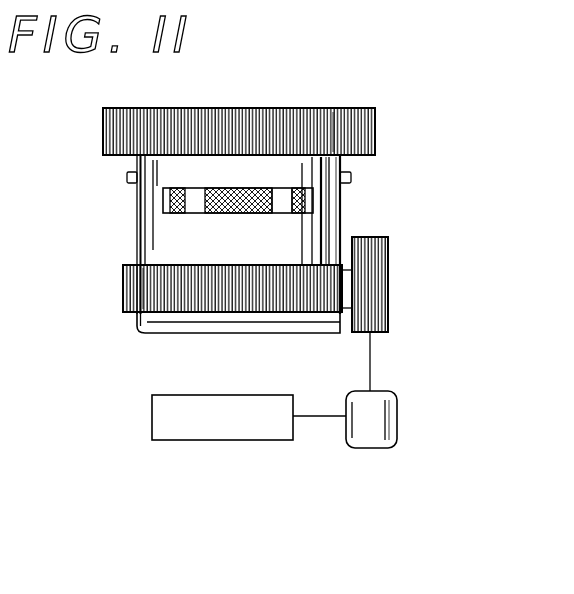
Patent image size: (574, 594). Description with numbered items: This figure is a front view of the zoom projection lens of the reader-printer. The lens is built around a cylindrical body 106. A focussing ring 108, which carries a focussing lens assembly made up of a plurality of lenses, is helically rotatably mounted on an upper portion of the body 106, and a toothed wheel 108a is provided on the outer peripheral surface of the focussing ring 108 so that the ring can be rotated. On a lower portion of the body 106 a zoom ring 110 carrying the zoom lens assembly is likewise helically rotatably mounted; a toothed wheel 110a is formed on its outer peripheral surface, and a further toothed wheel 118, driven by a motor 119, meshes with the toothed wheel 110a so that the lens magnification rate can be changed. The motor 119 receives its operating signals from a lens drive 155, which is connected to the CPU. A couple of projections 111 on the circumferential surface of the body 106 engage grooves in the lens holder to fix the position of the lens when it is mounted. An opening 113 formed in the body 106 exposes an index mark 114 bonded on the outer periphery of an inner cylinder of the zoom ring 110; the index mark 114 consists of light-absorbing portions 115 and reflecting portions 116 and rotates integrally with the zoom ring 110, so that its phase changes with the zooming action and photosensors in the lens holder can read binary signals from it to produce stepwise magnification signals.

The cylindrical body 106 is at (338, 216).
The focussing ring 108 is at (319, 108).
The toothed wheel 108a is at (333, 133).
The zoom ring 110 is at (133, 268).
The toothed wheel 110a is at (140, 287).
The projections 111 is at (127, 178).
The opening 113 is at (163, 201).
The index mark 114 is at (289, 218).
The light-absorbing portions 115 is at (293, 190).
The reflecting portions 116 is at (197, 208).
The toothed wheel 118 is at (388, 288).
The motor 119 is at (388, 415).
The lens drive 155 is at (216, 440).